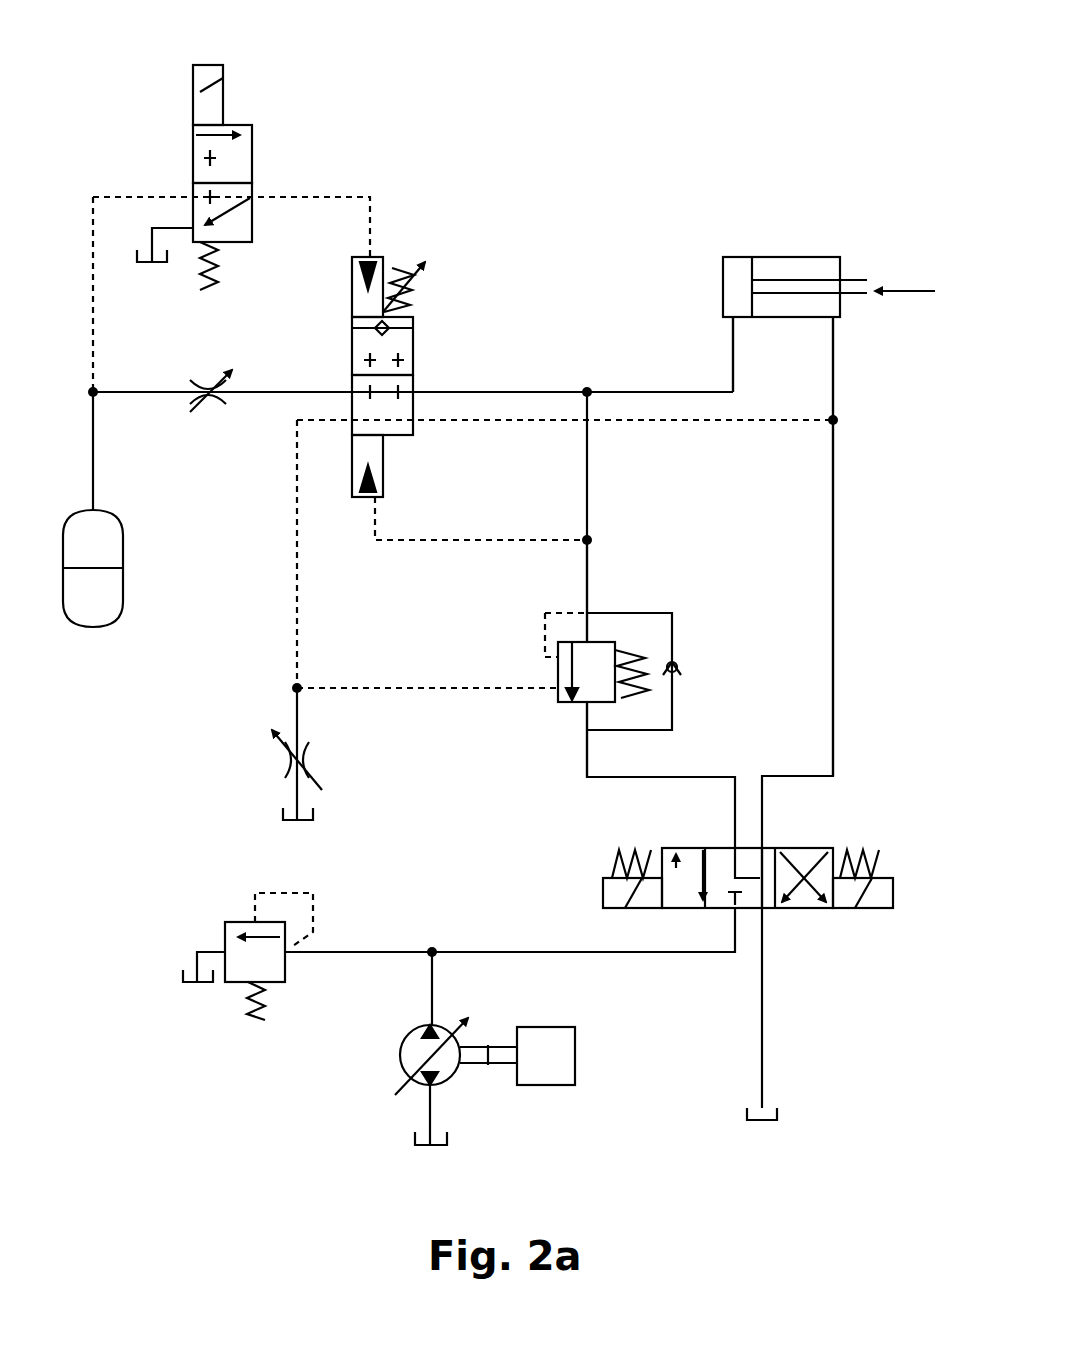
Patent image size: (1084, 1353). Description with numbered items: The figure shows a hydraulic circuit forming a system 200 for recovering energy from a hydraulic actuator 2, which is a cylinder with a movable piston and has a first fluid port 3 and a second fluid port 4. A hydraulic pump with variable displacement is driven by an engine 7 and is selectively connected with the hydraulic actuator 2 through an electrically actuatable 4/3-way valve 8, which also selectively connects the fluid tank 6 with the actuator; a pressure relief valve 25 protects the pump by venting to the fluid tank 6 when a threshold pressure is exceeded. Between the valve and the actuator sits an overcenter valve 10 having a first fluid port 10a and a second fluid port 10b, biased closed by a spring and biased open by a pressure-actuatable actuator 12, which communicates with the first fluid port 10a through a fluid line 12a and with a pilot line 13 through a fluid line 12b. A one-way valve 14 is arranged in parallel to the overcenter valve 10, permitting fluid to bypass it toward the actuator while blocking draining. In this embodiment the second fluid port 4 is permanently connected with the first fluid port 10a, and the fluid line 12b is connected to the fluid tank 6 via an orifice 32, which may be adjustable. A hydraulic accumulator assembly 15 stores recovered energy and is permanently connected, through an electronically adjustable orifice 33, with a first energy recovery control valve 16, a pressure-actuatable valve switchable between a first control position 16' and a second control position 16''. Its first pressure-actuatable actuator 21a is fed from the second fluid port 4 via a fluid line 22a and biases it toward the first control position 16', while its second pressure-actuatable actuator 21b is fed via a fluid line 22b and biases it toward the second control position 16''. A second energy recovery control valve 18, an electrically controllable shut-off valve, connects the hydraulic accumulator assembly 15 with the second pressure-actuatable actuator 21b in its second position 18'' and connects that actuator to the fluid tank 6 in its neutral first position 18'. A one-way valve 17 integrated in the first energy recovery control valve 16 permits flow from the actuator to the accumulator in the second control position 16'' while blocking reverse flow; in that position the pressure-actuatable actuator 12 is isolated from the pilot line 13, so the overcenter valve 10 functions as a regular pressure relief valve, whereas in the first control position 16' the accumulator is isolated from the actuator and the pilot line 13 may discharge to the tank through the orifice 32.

The hydraulic actuator 2 is at (803, 287).
The first fluid port 3 is at (833, 320).
The second fluid port 4 is at (727, 320).
The fluid tank 6 is at (148, 273).
The engine 7 is at (575, 1073).
The 4/3-way valve 8 is at (817, 952).
The overcenter valve 10 is at (614, 668).
The first fluid port 10a is at (590, 612).
The second fluid port 10b is at (585, 725).
The pressure-actuatable actuator 12 is at (556, 667).
The fluid line 12a is at (550, 608).
The fluid line 12b is at (430, 690).
The pilot line 13 is at (833, 672).
The one-way valve 14 is at (683, 678).
The hydraulic accumulator assembly 15 is at (95, 628).
The first energy recovery control valve 16 is at (414, 369).
The first control position 16' is at (420, 418).
The second control position 16'' is at (392, 334).
The one-way valve 17 is at (366, 340).
The second energy recovery control valve 18 is at (211, 160).
The first control position 18' is at (224, 236).
The second control position 18'' is at (254, 124).
The first pressure-actuatable actuator 21a is at (353, 500).
The second pressure-actuatable actuator 21b is at (372, 250).
The fluid line 22a is at (455, 535).
The fluid line 22b is at (318, 197).
The pressure relief valve 25 is at (212, 905).
The orifice 32 is at (268, 765).
The electronically adjustable orifice 33 is at (208, 422).
The system 200 is at (225, 1152).